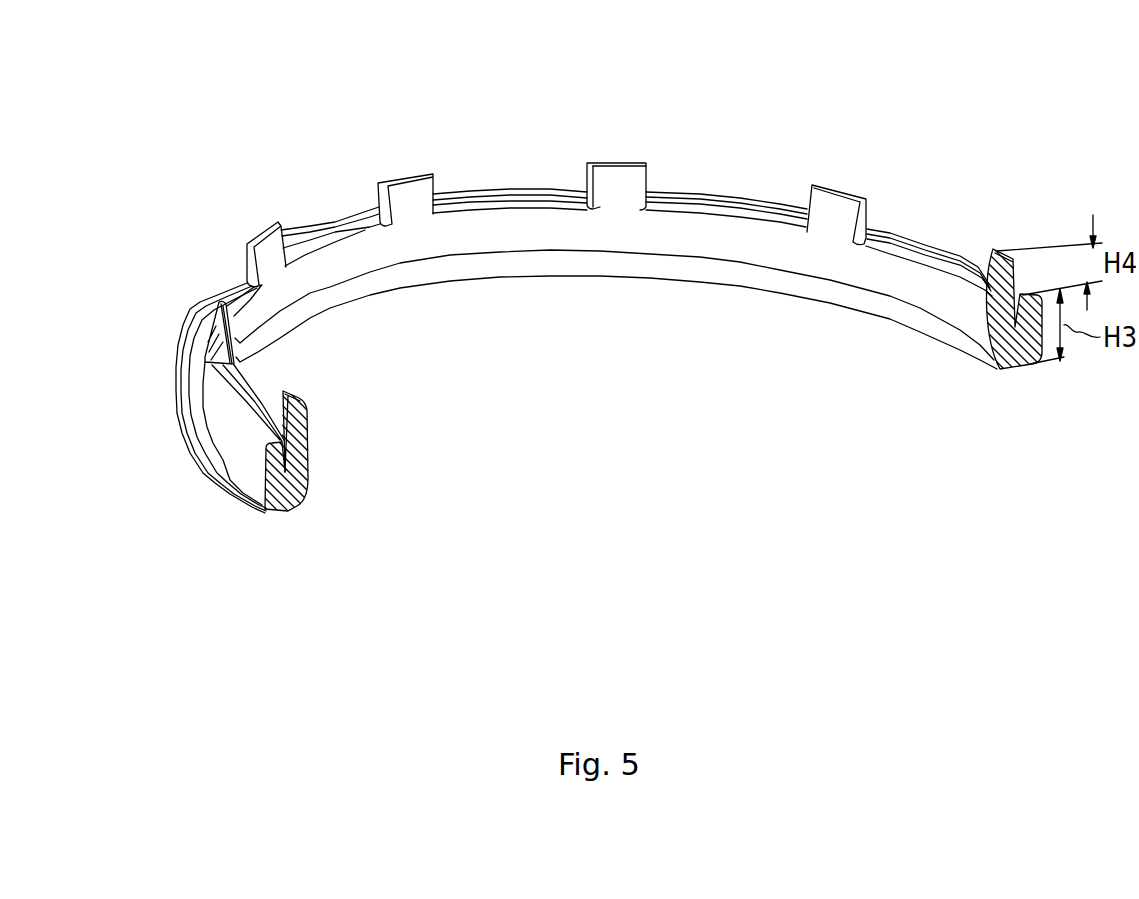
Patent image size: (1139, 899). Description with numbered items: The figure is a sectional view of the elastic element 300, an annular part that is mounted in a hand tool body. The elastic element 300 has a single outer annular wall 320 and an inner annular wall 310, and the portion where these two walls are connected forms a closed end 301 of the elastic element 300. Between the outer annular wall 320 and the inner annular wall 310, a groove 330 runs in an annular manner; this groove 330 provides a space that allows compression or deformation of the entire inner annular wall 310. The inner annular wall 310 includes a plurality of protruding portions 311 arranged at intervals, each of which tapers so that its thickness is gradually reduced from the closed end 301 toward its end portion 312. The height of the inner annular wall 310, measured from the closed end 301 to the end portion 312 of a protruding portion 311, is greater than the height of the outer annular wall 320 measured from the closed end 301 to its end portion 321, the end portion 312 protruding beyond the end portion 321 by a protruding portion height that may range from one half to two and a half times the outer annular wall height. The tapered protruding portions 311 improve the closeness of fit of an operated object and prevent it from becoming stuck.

The elastic element 300 is at (86, 84).
The closed end 301 is at (288, 511).
The inner annular wall 310 is at (613, 197).
The protruding portion 311 is at (215, 330).
The end portion of the protruding portion 312 is at (636, 163).
The outer annular wall 320 is at (204, 435).
The end portion of the outer annular wall 321 is at (192, 364).
The groove 330 is at (266, 447).